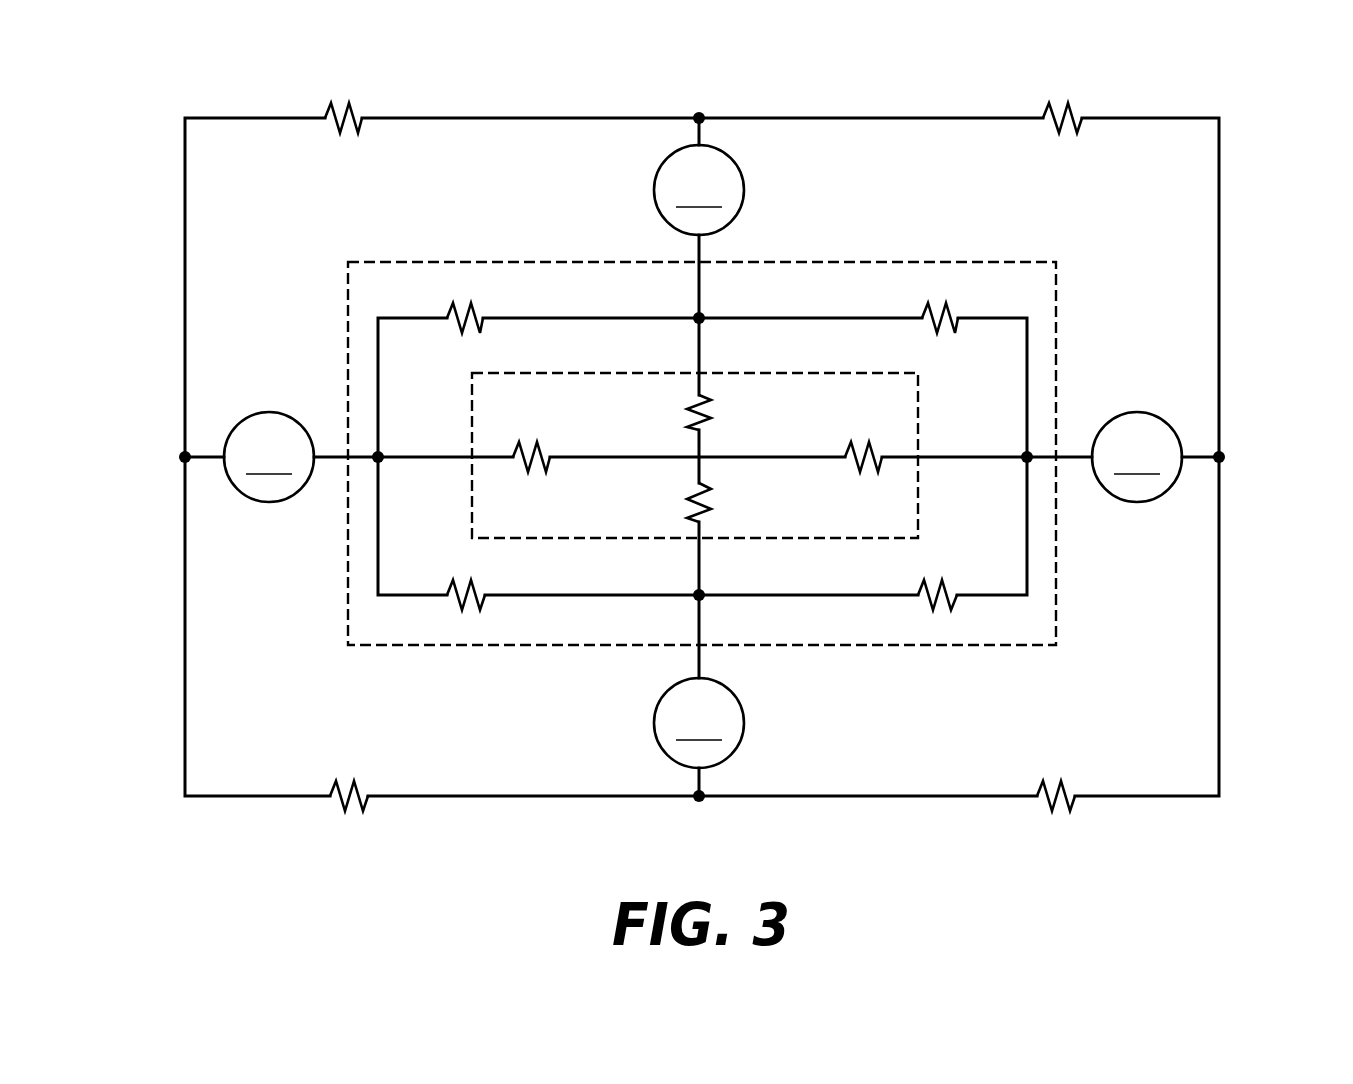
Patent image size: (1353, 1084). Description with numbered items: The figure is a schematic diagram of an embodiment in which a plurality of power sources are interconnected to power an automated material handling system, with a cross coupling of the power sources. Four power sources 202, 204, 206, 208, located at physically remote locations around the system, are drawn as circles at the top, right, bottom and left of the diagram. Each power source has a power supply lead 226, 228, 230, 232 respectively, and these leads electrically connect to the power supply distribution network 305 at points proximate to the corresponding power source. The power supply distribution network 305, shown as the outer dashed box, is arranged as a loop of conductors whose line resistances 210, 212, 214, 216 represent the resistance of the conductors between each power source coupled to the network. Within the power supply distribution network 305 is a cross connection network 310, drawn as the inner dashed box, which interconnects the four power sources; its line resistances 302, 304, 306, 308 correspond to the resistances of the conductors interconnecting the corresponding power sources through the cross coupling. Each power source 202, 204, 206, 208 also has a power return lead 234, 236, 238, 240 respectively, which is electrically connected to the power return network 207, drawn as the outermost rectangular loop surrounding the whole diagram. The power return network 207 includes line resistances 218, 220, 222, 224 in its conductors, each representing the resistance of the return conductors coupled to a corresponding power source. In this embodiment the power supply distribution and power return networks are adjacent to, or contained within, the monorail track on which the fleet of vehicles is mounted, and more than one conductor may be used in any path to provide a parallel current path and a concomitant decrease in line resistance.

The power source 202 is at (699, 190).
The power source 204 is at (1137, 457).
The power source 206 is at (699, 723).
The power return network 207 is at (1220, 150).
The power source 208 is at (269, 457).
The line resistance 210 is at (944, 330).
The line resistance 212 is at (940, 580).
The line resistance 214 is at (470, 580).
The line resistance 216 is at (483, 328).
The line resistance 218 is at (1058, 133).
The line resistance 220 is at (1052, 778).
The line resistance 222 is at (352, 780).
The line resistance 224 is at (340, 125).
The power supply lead 226 is at (700, 295).
The power supply lead 228 is at (1077, 458).
The power supply lead 230 is at (700, 660).
The power supply lead 232 is at (328, 460).
The power return lead 234 is at (701, 128).
The power return lead 236 is at (1197, 455).
The power return lead 238 is at (700, 783).
The power return lead 240 is at (207, 457).
The line resistance 302 is at (710, 410).
The line resistance 304 is at (855, 475).
The power supply distribution network 305 is at (1056, 262).
The line resistance 306 is at (710, 497).
The line resistance 308 is at (545, 475).
The cross connection network 310 is at (919, 393).